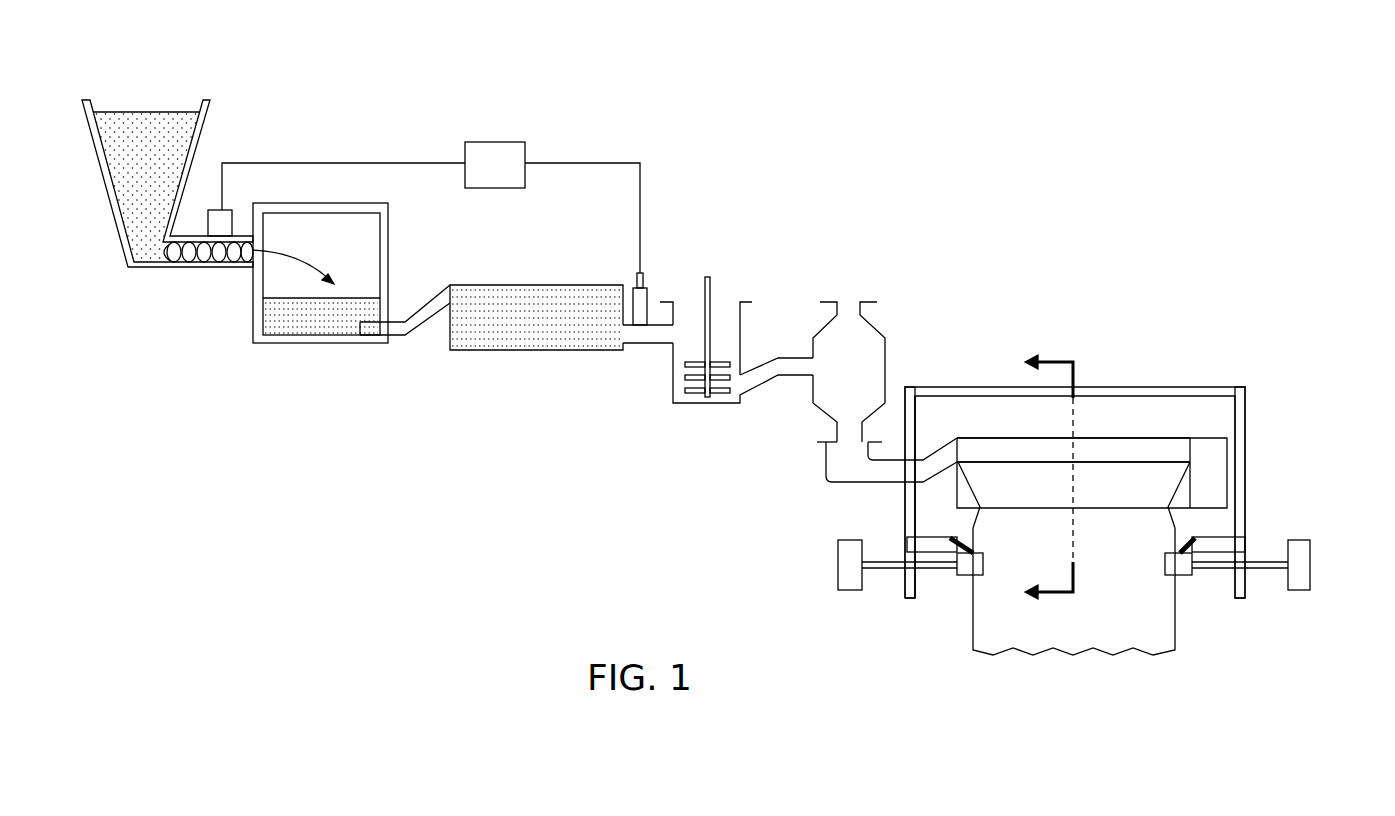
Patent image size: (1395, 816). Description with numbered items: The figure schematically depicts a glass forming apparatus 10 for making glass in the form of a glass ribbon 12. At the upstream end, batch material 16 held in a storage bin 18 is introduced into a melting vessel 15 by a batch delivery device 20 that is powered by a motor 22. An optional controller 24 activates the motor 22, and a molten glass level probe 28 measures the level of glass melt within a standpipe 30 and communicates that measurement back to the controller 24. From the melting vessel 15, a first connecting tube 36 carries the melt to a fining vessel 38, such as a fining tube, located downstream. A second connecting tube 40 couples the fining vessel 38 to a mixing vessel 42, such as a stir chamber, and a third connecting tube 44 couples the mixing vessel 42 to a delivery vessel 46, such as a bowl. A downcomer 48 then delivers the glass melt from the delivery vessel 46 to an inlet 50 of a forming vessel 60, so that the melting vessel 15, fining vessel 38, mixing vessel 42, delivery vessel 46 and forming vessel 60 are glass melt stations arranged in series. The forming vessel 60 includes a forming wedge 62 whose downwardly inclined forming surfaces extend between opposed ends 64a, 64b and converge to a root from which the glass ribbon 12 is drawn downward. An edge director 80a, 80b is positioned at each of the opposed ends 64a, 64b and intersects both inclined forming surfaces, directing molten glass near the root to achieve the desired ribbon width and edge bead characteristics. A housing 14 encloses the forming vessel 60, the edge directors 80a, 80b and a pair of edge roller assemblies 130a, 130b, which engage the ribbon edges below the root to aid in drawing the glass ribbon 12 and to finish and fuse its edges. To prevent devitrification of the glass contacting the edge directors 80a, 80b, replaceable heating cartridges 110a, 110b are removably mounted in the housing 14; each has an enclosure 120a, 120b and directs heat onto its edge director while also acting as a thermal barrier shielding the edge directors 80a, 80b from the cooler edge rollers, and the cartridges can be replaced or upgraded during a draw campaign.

The glass forming apparatus 10 is at (924, 132).
The glass ribbon 12 is at (973, 628).
The housing 14 is at (1075, 438).
The melting vessel 15 is at (282, 343).
The batch material 16 is at (137, 110).
The storage bin 18 is at (102, 183).
The batch delivery device 20 is at (200, 257).
The motor 22 is at (228, 210).
The controller 24 is at (492, 142).
The molten glass level probe 28 is at (635, 275).
The standpipe 30 is at (647, 298).
The first connecting tube 36 is at (423, 302).
The fining vessel 38 is at (532, 283).
The second connecting tube 40 is at (653, 343).
The mixing vessel 42 is at (745, 323).
The third connecting tube 44 is at (755, 395).
The delivery vessel 46 is at (887, 343).
The downcomer 48 is at (835, 432).
The inlet 50 is at (828, 460).
The forming vessel 60 is at (1092, 413).
The forming wedge 62 is at (954, 457).
The first opposed end of forming wedge 64a is at (980, 457).
The second opposed end of forming wedge 64b is at (1178, 455).
The first edge director 80a is at (992, 485).
The second edge director 80b is at (1158, 488).
The first replaceable heating cartridge 110a is at (858, 550).
The second replaceable heating cartridge 110b is at (1293, 551).
The enclosure 120a is at (935, 535).
The enclosure 120b is at (1218, 537).
The first edge roller assembly 130a is at (866, 539).
The second edge roller assembly 130b is at (1290, 539).